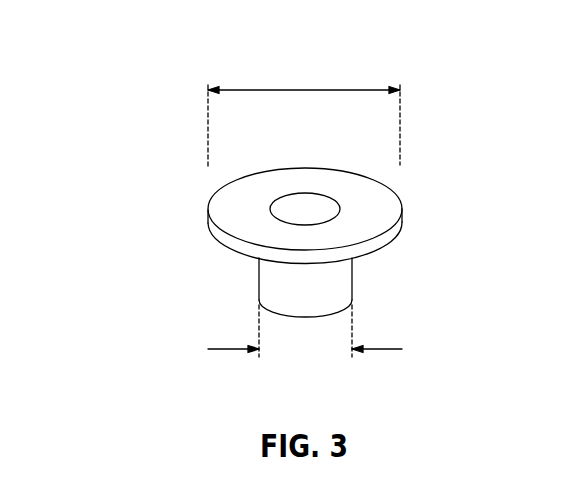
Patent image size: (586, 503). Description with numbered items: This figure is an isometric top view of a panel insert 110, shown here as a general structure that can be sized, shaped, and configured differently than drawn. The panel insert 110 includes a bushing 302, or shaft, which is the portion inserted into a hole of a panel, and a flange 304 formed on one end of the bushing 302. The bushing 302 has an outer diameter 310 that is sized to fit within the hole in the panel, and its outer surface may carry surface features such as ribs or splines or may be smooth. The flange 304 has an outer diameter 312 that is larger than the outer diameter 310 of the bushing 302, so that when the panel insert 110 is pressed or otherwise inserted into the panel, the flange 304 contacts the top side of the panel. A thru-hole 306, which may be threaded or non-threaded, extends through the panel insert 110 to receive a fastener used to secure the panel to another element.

The panel insert 110 is at (332, 215).
The bushing 302 is at (268, 287).
The flange 304 is at (228, 205).
The thru-hole 306 is at (320, 208).
The outer diameter of the bushing 310 is at (228, 351).
The outer diameter of the flange 312 is at (316, 90).